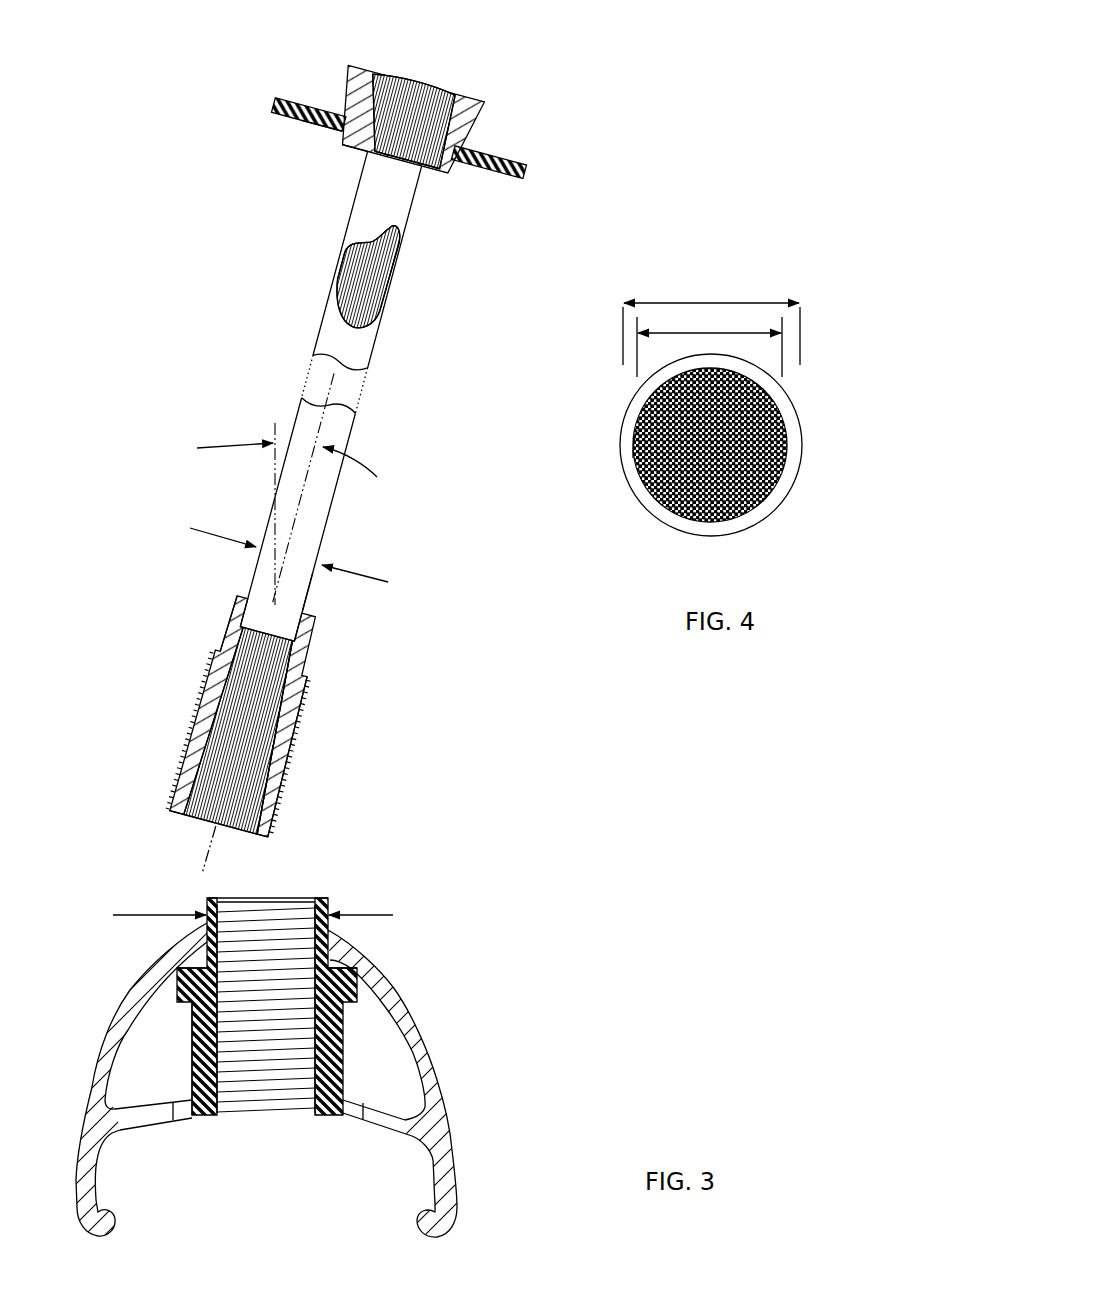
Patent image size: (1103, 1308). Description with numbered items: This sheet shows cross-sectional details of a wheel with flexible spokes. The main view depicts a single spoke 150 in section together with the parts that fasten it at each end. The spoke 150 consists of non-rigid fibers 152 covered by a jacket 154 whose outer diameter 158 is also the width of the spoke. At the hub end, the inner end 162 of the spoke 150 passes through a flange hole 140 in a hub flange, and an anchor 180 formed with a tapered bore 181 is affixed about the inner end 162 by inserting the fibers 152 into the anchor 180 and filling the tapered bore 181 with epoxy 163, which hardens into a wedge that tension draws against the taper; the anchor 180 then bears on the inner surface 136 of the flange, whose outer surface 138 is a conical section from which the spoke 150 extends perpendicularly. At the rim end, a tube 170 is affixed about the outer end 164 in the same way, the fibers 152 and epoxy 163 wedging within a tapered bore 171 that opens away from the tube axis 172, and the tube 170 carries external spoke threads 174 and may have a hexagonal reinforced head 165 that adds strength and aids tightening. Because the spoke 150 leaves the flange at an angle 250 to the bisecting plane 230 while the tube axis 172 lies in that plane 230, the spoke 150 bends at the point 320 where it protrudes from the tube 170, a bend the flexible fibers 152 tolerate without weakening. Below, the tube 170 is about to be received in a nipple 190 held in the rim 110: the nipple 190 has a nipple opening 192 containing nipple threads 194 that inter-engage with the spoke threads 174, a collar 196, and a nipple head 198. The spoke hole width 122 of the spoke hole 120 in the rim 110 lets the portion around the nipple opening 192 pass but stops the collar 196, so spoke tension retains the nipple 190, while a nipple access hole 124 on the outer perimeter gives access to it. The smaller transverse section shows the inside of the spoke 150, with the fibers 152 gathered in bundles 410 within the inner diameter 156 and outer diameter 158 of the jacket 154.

In FIG. 3, the rim 110 is at (445, 1128).
In FIG. 3, the spoke hole 120 is at (207, 937).
In FIG. 3, the spoke hole width 122 is at (147, 915).
In FIG. 3, the nipple access hole 124 is at (358, 1117).
In FIG. 3, the inner surface 136 is at (297, 100).
In FIG. 3, the outer surface 138 is at (310, 123).
In FIG. 3, the flange hole 140 is at (346, 133).
In FIG. 3, the spoke 150 is at (257, 305).
In FIG. 4, the spoke 150 is at (832, 387).
In FIG. 3, the fibers 152 is at (370, 278).
In FIG. 4, the fibers 152 is at (782, 457).
In FIG. 3, the jacket 154 is at (360, 340).
In FIG. 4, the jacket 154 is at (620, 440).
In FIG. 4, the inner diameter 156 is at (682, 333).
In FIG. 3, the outer diameter 158 is at (360, 573).
In FIG. 4, the outer diameter 158 is at (723, 300).
In FIG. 3, the inner end 162 is at (388, 160).
In FIG. 3, the epoxy 163 is at (413, 77).
In FIG. 3, the outer end 164 is at (255, 573).
In FIG. 3, the reinforced head 165 is at (237, 595).
In FIG. 3, the tube 170 is at (200, 680).
In FIG. 3, the tapered bore 171 is at (277, 730).
In FIG. 3, the tube axis 172 is at (210, 847).
In FIG. 3, the spoke threads 174 is at (277, 763).
In FIG. 3, the anchor 180 is at (455, 125).
In FIG. 3, the tapered bore 181 is at (367, 97).
In FIG. 3, the nipple 190 is at (342, 1057).
In FIG. 3, the nipple opening 192 is at (255, 905).
In FIG. 3, the nipple threads 194 is at (277, 1060).
In FIG. 3, the collar 196 is at (357, 982).
In FIG. 3, the nipple head 198 is at (193, 1072).
In FIG. 3, the plane 230 is at (272, 474).
In FIG. 3, the angle 250 is at (217, 443).
In FIG. 3, the point 320 is at (307, 608).
In FIG. 4, the bundles 410 is at (641, 467).